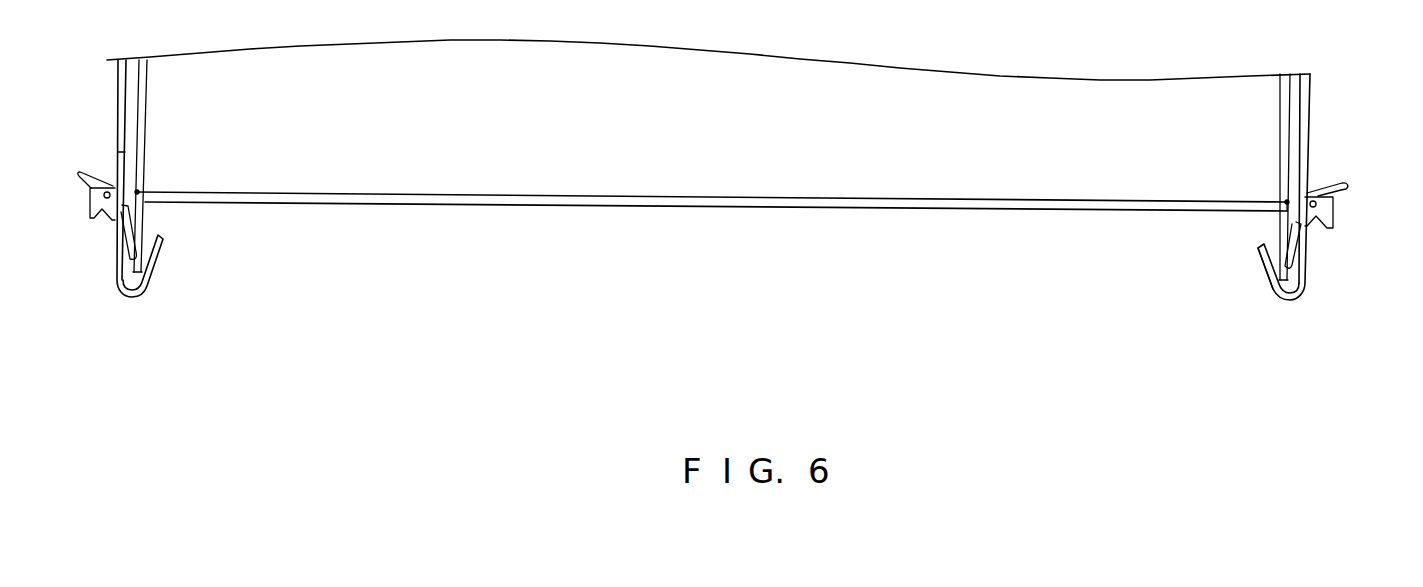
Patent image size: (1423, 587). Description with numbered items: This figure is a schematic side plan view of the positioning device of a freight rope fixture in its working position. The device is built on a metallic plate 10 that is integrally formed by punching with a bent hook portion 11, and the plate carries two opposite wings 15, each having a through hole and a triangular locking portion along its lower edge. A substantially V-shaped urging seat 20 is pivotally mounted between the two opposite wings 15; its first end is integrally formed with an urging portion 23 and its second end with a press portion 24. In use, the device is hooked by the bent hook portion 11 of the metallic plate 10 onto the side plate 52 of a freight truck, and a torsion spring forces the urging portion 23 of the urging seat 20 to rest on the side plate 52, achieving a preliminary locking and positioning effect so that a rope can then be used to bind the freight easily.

The metallic plate 10 is at (1308, 293).
The bent hook portion 11 is at (1267, 264).
The opposite wings 15 is at (1335, 210).
The urging seat 20 is at (1323, 171).
The urging portion 23 is at (1291, 245).
The press portion 24 is at (1343, 185).
The side plate 52 is at (1280, 223).